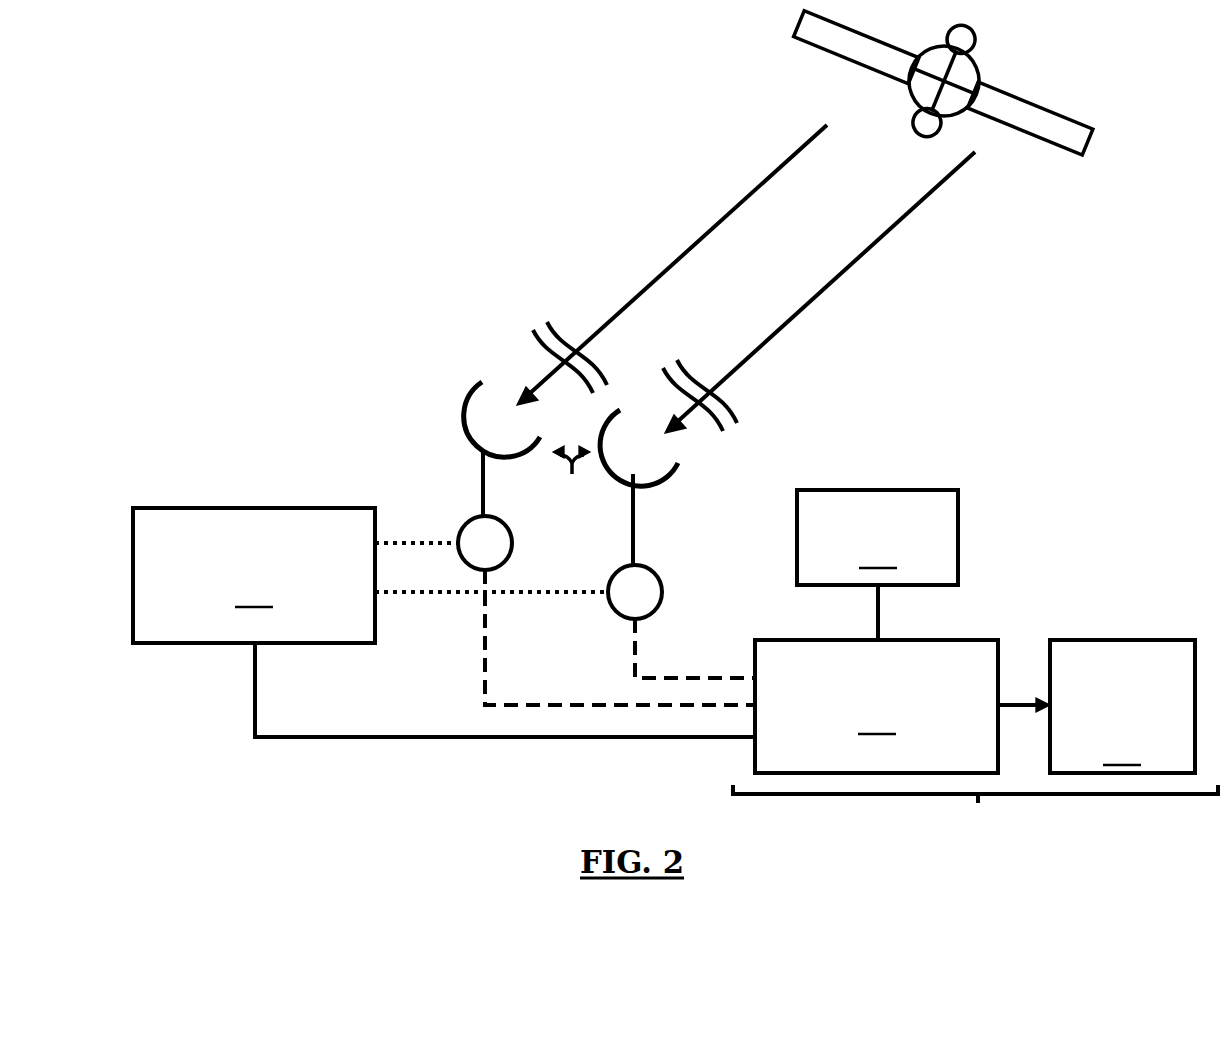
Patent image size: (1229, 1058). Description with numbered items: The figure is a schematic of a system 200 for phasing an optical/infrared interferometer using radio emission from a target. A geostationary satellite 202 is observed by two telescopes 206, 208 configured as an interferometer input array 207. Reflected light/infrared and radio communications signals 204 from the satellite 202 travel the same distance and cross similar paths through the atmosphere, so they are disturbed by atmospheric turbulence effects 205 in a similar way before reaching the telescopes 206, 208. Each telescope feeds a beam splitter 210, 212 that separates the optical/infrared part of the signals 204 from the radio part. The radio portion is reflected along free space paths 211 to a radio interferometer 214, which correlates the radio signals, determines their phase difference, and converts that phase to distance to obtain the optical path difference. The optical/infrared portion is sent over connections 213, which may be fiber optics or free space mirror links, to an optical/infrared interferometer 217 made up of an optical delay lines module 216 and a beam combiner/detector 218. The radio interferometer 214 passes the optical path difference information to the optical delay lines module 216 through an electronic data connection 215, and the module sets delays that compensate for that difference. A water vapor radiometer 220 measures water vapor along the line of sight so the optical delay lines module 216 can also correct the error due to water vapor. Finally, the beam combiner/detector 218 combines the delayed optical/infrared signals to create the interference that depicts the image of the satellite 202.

The system 200 is at (301, 131).
The geostationary satellite 202 is at (750, 52).
The reflected light/infrared and radio communications signals 204 is at (658, 218).
The atmospheric turbulence effects 205 is at (516, 316).
The telescope 206 is at (467, 402).
The interferometer input array 207 is at (571, 475).
The telescope 208 is at (660, 475).
The beam splitter 210 is at (512, 548).
The free space paths 211 is at (427, 592).
The beam splitter 212 is at (662, 585).
The connections 213 is at (486, 662).
The radio interferometer 214 is at (254, 575).
The connection 215 is at (396, 740).
The optical delay lines module 216 is at (902, 706).
The optical/infrared interferometer 217 is at (975, 810).
The beam combiner/detector 218 is at (1122, 706).
The water vapor radiometer 220 is at (877, 565).